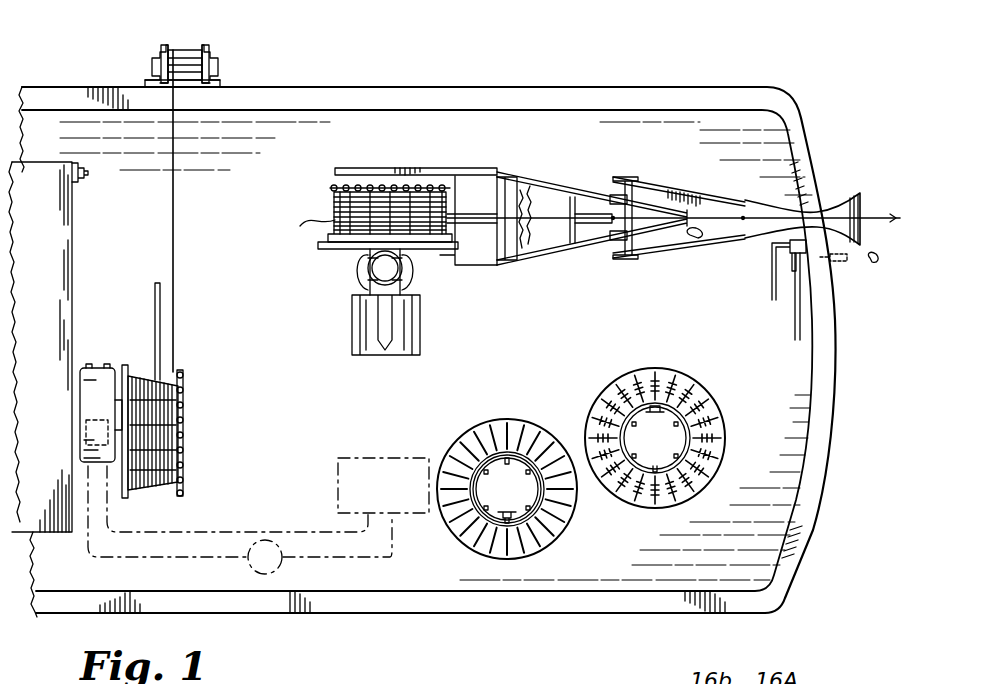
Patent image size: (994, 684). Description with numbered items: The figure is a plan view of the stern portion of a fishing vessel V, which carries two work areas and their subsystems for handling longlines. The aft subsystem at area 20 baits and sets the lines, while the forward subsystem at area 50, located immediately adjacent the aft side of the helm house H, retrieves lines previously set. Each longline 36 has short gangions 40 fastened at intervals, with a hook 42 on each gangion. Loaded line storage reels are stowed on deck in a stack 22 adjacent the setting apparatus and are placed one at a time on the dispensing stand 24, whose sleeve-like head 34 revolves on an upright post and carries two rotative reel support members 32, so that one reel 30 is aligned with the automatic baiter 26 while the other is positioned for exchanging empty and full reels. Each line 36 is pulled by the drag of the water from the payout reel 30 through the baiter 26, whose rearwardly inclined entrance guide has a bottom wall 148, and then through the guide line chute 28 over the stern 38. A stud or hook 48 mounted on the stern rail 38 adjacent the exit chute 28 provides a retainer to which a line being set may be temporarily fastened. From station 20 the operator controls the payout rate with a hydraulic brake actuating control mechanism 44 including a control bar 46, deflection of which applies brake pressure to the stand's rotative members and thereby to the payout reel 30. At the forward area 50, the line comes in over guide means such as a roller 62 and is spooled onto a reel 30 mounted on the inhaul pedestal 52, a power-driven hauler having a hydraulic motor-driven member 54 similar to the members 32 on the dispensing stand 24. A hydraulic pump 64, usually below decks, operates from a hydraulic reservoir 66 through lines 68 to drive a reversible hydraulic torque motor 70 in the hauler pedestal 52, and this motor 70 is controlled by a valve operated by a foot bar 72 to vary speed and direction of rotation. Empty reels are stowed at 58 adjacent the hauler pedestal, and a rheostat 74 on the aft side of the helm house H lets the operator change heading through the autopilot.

The aft subsystem area 20 is at (634, 338).
The stack of reels 22 is at (712, 496).
The dispensing stand 24 is at (428, 272).
The automatic baiter 26 is at (528, 166).
The guide line chute 28 is at (684, 258).
The line storage reel 30 is at (198, 416).
The rotative reel support member 32 is at (352, 343).
The sleeve-like head 34 is at (362, 286).
The longline 36 is at (178, 215).
The stern 38 is at (836, 378).
The gangion 40 is at (500, 214).
The hook 42 is at (462, 208).
The hydraulic brake actuating control mechanism 44 is at (795, 292).
The control bar 46 is at (772, 302).
The stud or hook 48 is at (845, 262).
The forward subsystem operating area 50 is at (112, 285).
The inhaul pedestal 52 is at (97, 368).
The hydraulic motor-driven member 54 is at (186, 450).
The empty reel storage location 58 is at (568, 548).
The roller 62 is at (188, 52).
The hydraulic pump 64 is at (270, 540).
The hydraulic reservoir 66 is at (370, 458).
The hydraulic lines 68 is at (222, 556).
The reversible hydraulic torque motor 70 is at (84, 420).
The foot bar 72 is at (157, 283).
The rheostat 74 is at (85, 172).
The ramp bottom wall 148 is at (434, 180).
The helm house H is at (86, 252).
The fishing vessel V is at (684, 80).